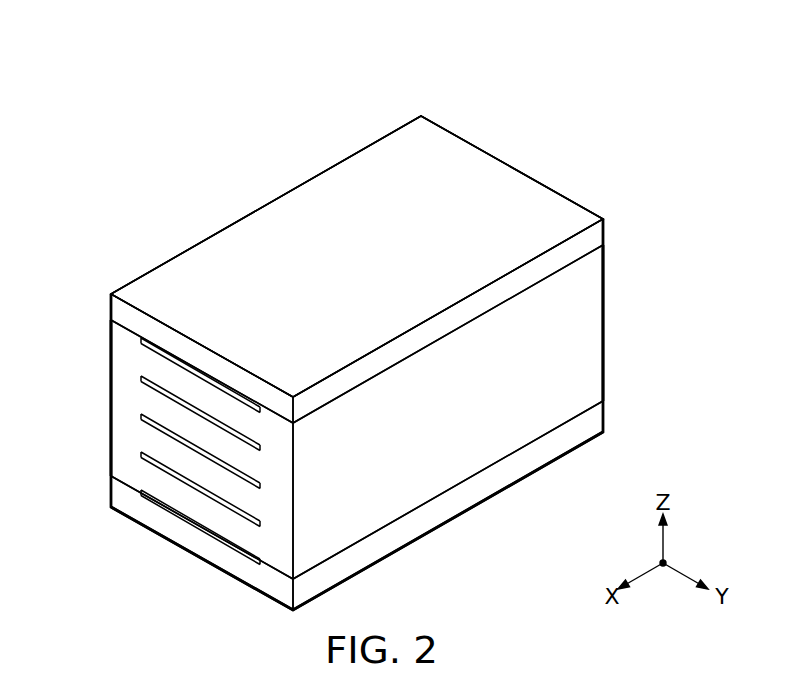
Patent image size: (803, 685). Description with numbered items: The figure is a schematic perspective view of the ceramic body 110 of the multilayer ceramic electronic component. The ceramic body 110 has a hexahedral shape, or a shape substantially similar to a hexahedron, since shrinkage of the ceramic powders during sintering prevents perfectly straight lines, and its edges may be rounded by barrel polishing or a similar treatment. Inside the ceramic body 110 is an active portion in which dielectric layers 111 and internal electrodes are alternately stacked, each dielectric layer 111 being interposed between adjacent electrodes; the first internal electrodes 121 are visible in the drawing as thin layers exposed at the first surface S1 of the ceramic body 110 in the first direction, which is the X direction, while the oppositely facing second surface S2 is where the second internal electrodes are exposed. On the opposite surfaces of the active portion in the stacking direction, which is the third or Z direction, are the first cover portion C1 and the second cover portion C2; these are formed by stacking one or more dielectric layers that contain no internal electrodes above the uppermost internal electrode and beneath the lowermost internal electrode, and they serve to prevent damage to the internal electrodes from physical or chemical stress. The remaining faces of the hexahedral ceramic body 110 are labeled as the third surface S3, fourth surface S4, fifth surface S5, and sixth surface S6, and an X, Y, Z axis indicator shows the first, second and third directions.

The ceramic body 110 is at (195, 65).
The dielectric layer 111 is at (121, 423).
The first internal electrode 121 is at (153, 390).
The first cover portion C1 is at (121, 313).
The second cover portion C2 is at (121, 492).
The first surface S1 is at (186, 500).
The second surface S2 is at (512, 194).
The third surface S3 is at (534, 425).
The fourth surface S4 is at (216, 262).
The fifth surface S5 is at (388, 168).
The sixth surface S6 is at (417, 520).